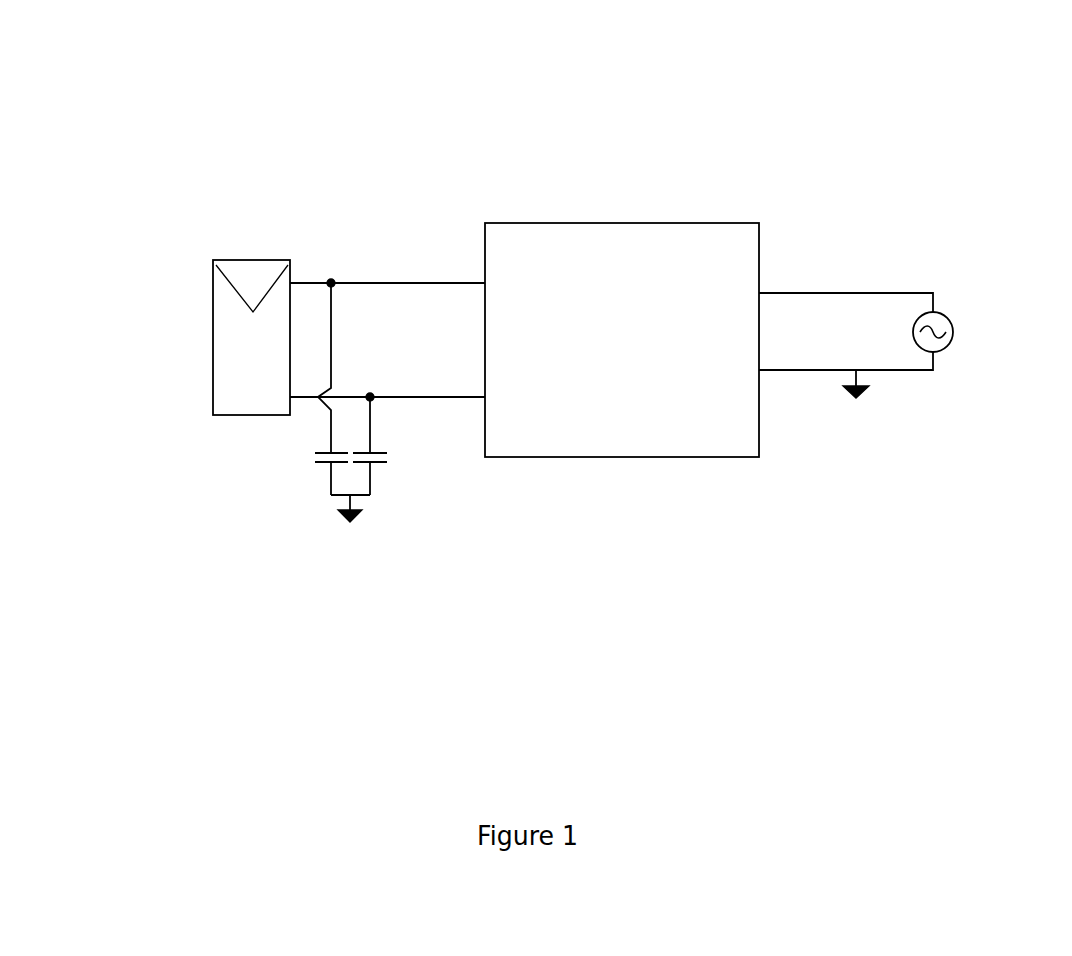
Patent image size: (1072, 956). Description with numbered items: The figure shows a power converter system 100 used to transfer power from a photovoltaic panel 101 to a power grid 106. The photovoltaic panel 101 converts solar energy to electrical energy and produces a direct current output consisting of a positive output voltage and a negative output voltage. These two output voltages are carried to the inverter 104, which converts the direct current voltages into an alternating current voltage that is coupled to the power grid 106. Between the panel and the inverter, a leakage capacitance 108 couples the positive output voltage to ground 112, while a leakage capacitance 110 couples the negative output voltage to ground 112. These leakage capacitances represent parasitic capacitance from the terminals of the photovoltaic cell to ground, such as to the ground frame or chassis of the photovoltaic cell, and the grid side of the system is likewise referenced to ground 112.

The power converter system 100 is at (132, 176).
The photovoltaic panel 101 is at (213, 338).
The inverter 104 is at (622, 340).
The power grid 106 is at (912, 323).
The leakage capacitance 108 is at (312, 457).
The leakage capacitance 110 is at (392, 468).
The ground 112 is at (343, 518).